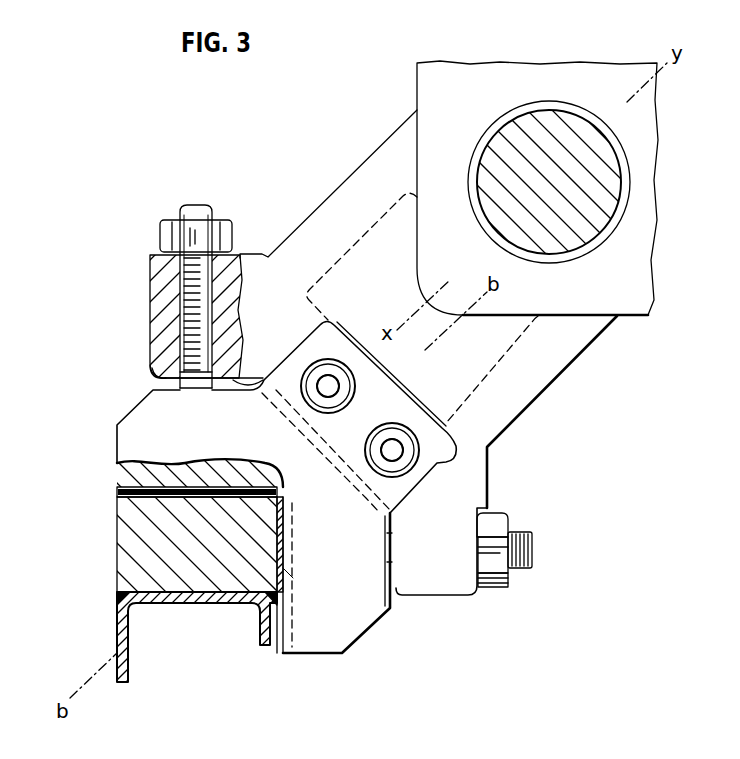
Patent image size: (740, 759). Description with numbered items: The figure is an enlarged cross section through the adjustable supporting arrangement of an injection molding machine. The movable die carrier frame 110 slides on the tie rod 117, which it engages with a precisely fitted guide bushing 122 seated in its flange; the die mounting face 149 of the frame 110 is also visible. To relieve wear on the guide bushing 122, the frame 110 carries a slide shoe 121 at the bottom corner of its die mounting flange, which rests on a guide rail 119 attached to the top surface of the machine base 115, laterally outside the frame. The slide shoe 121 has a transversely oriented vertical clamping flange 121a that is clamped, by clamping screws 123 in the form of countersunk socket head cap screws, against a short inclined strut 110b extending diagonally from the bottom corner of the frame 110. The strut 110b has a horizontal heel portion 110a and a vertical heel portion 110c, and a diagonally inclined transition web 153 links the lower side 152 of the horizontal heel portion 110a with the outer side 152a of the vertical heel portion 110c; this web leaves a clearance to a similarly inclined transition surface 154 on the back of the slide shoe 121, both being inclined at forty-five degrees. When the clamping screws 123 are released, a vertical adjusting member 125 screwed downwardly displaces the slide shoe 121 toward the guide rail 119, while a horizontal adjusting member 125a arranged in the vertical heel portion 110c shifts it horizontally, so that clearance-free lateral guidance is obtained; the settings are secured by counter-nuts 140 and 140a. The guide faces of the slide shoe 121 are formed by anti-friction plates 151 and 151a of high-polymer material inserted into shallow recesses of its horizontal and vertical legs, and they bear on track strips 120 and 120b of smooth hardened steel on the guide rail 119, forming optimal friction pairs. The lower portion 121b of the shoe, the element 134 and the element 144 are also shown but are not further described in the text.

The movable die carrier frame 110 is at (417, 93).
The horizontal heel portion 110a is at (190, 286).
The inclined strut 110b is at (365, 247).
The vertical heel portion 110c is at (437, 540).
The machine base 115 is at (117, 630).
The tie rod 117 is at (515, 132).
The guide rail 119 is at (157, 543).
The track strip 120 is at (150, 498).
The track strip 120b is at (283, 583).
The slide shoe 121 is at (153, 432).
The clamping flange 121a is at (370, 405).
The lower portion of mounting bracket 121b is at (352, 615).
The guide bushing 122 is at (622, 153).
The clamping screw 123 is at (330, 378).
The vertical adjusting member 125 is at (180, 316).
The horizontal adjusting member 125a is at (532, 548).
The rivet 134 is at (316, 401).
The counter-nut 140 is at (175, 243).
The counter-nut 140a is at (500, 585).
The washer 144 is at (155, 368).
The die mounting face 149 is at (552, 80).
The anti-friction plate 151 is at (187, 487).
The anti-friction plate 151a is at (288, 573).
The lower side of horizontal heel portion 152 is at (243, 377).
The outer side of vertical heel portion 152a is at (393, 588).
The transition web 153 is at (280, 383).
The transition surface 154 is at (358, 492).